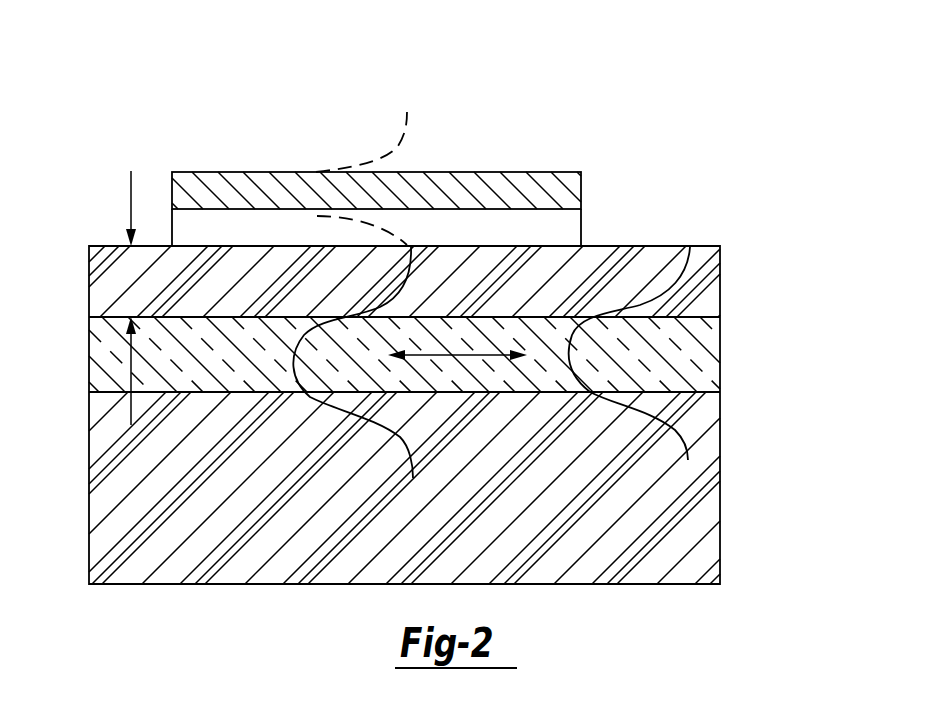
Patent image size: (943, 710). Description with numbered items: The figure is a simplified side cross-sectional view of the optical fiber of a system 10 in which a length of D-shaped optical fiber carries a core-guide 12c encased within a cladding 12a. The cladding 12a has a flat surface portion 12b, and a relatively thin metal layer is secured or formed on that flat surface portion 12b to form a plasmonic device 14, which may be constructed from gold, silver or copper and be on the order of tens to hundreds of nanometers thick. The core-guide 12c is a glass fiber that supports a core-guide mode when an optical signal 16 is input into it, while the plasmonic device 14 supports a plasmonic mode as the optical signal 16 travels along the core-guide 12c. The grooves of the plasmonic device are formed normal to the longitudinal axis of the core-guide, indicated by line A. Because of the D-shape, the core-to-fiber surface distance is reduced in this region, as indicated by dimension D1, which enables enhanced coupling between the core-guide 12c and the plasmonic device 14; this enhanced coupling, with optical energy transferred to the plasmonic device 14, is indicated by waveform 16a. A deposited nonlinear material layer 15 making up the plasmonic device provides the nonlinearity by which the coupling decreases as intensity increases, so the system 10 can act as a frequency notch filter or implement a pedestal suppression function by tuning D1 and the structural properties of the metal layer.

The system 10 is at (643, 122).
The cladding 12a is at (652, 538).
The flat surface portion 12b is at (690, 247).
The core-guide 12c is at (224, 376).
The plasmonic device 14 is at (495, 170).
The deposited nonlinear material layer 15 is at (581, 222).
The optical signal 16 is at (850, 355).
The waveform 16a is at (380, 161).
The longitudinal axis of the core-guide A is at (453, 357).
The core-to-fiber surface distance D1 is at (131, 188).